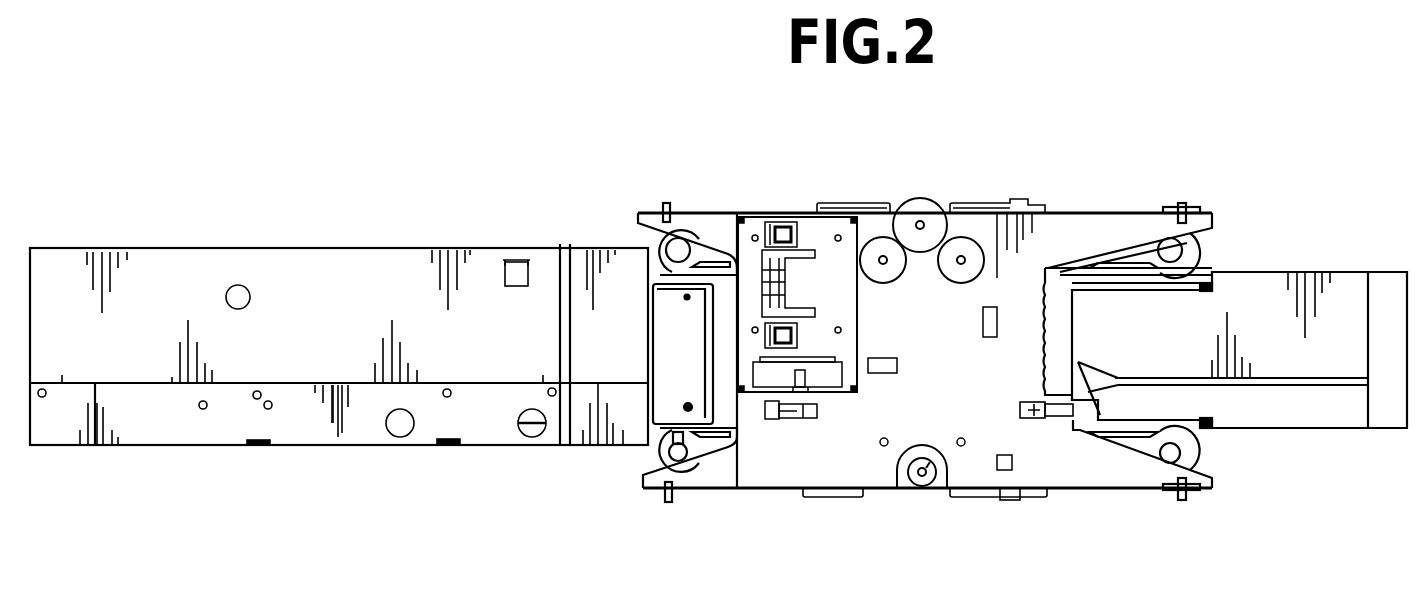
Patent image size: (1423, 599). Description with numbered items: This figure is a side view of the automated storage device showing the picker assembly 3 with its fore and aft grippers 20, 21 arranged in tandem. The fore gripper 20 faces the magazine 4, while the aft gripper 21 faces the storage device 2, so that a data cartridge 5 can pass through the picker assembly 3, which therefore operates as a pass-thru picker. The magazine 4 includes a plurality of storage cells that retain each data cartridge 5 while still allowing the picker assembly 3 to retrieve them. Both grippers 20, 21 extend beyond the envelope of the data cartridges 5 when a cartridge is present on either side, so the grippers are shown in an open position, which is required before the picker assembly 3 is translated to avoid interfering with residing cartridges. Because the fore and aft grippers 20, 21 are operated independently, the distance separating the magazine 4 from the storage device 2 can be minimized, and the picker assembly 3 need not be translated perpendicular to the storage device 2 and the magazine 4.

The storage device 2 is at (325, 267).
The picker assembly 3 is at (1095, 222).
The magazine 4 is at (1332, 423).
The data cartridge 5 is at (675, 367).
The fore gripper 20 is at (1248, 222).
The aft gripper 21 is at (608, 215).